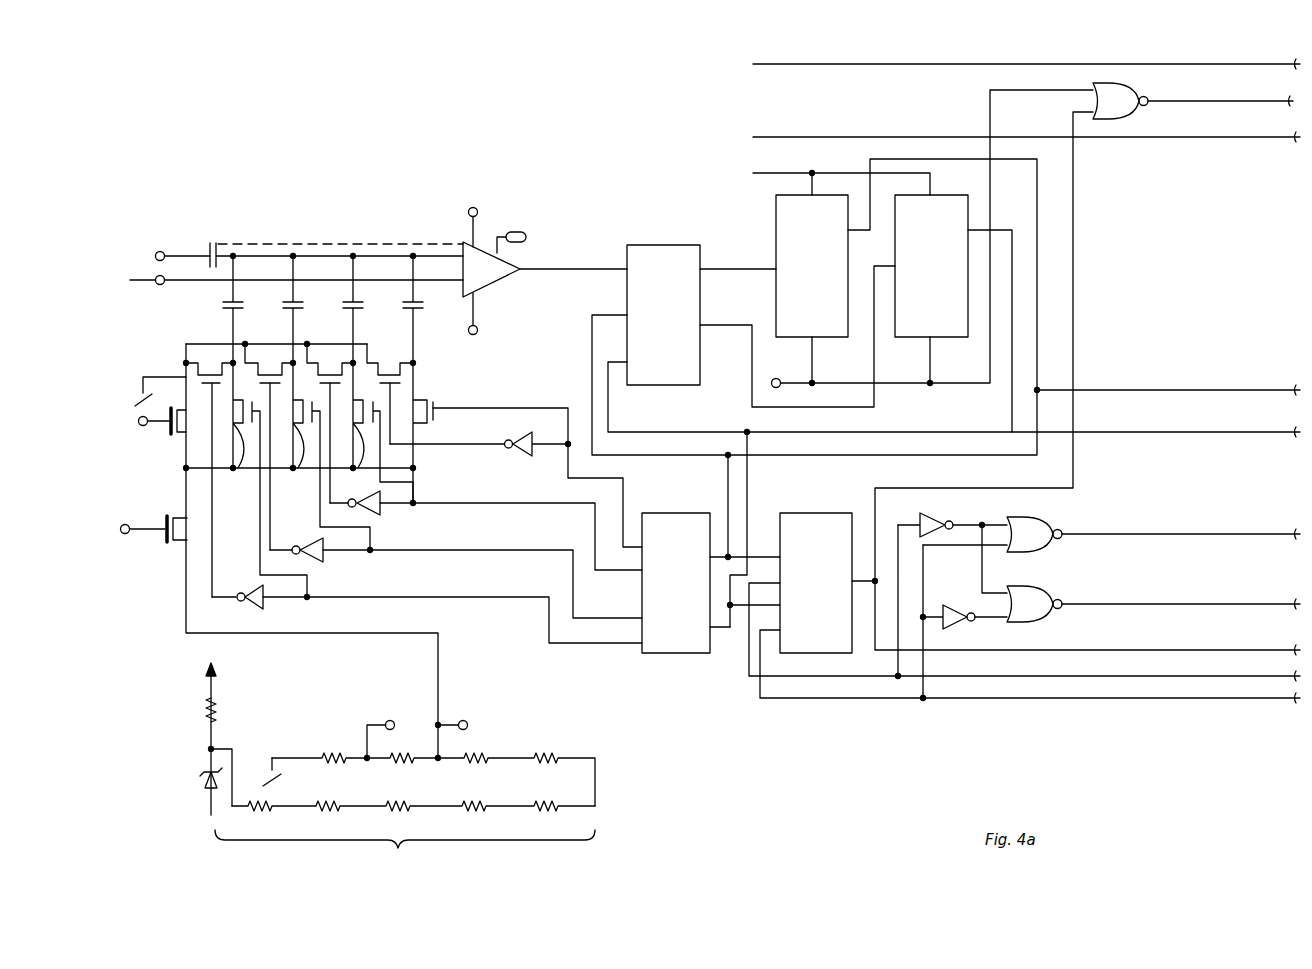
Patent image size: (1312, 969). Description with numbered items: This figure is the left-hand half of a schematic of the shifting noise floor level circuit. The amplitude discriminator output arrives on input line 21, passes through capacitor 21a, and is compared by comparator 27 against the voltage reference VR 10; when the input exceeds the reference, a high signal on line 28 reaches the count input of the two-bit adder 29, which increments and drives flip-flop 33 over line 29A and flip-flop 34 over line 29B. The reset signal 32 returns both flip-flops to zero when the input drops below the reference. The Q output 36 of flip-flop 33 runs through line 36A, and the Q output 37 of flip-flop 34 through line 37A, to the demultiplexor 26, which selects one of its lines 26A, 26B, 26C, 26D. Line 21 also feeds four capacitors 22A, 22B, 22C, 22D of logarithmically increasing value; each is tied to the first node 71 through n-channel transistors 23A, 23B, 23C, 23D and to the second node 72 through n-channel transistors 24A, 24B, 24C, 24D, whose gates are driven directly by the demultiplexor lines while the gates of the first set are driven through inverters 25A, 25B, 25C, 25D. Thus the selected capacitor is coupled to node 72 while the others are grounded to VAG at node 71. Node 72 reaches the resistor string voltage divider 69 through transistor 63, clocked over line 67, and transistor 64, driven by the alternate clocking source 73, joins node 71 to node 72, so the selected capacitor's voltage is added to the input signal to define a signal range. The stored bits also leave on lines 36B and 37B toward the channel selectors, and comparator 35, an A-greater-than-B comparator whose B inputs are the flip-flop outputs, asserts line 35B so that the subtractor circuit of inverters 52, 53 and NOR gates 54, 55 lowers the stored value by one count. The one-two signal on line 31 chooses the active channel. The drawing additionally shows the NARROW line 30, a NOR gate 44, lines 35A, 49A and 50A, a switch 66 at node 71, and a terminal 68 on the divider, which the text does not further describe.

The voltage reference VR 10 is at (286, 289).
The input signal line 21 is at (178, 250).
The capacitor 21a is at (213, 239).
The capacitor 22A is at (222, 306).
The capacitor 22B is at (286, 311).
The capacitor 22C is at (346, 310).
The capacitor 22D is at (406, 313).
The n-channel transistor 23A is at (206, 392).
The n-channel transistor 23B is at (286, 392).
The n-channel transistor 23C is at (346, 392).
The n-channel transistor 23D is at (406, 392).
The n-channel transistor 24A is at (236, 469).
The n-channel transistor 24B is at (301, 469).
The n-channel transistor 24C is at (362, 464).
The n-channel transistor 24D is at (439, 402).
The inverter 25A is at (256, 604).
The inverter 25B is at (318, 556).
The inverter 25C is at (378, 511).
The inverter 25D is at (520, 449).
The demultiplexor 26 is at (711, 583).
The demultiplexor output line 26A is at (590, 647).
The demultiplexor output line 26B is at (602, 616).
The demultiplexor output line 26C is at (594, 534).
The demultiplexor output line 26D is at (627, 504).
The comparator 27 is at (460, 243).
The line 28 is at (586, 266).
The adder 29 is at (665, 315).
The adder output line 29A is at (736, 269).
The adder output line 29B is at (737, 325).
The NARROW signal line 30 is at (795, 64).
The one-two signal line 31 is at (825, 136).
The reset signal 32 is at (782, 173).
The flip-flop 33 is at (812, 289).
The flip-flop 34 is at (931, 289).
The comparator 35 is at (804, 583).
The comparator output line 35A is at (880, 478).
The line 35B is at (1196, 652).
The Q output of flip-flop 33 36 is at (592, 340).
The line 36A is at (722, 490).
The line 36B is at (1172, 390).
The Q output of flip-flop 34 37 is at (672, 430).
The line 37A is at (748, 487).
The line 37B is at (1230, 429).
The NOR gate 44 is at (1112, 84).
The signal line 49A is at (763, 700).
The signal line 50A is at (750, 660).
The inverter 52 is at (939, 518).
The inverter 53 is at (948, 604).
The NOR gate 54 is at (1042, 520).
The NOR gate 55 is at (1037, 588).
The transistor 63 is at (169, 542).
The transistor 64 is at (177, 436).
The switch 66 is at (138, 392).
The line 67 is at (122, 528).
The terminal 68 is at (391, 718).
The resistor string voltage divider 69 is at (397, 771).
The first node 71 is at (185, 350).
The second node 72 is at (186, 468).
The alternate clocking source 73 is at (138, 425).